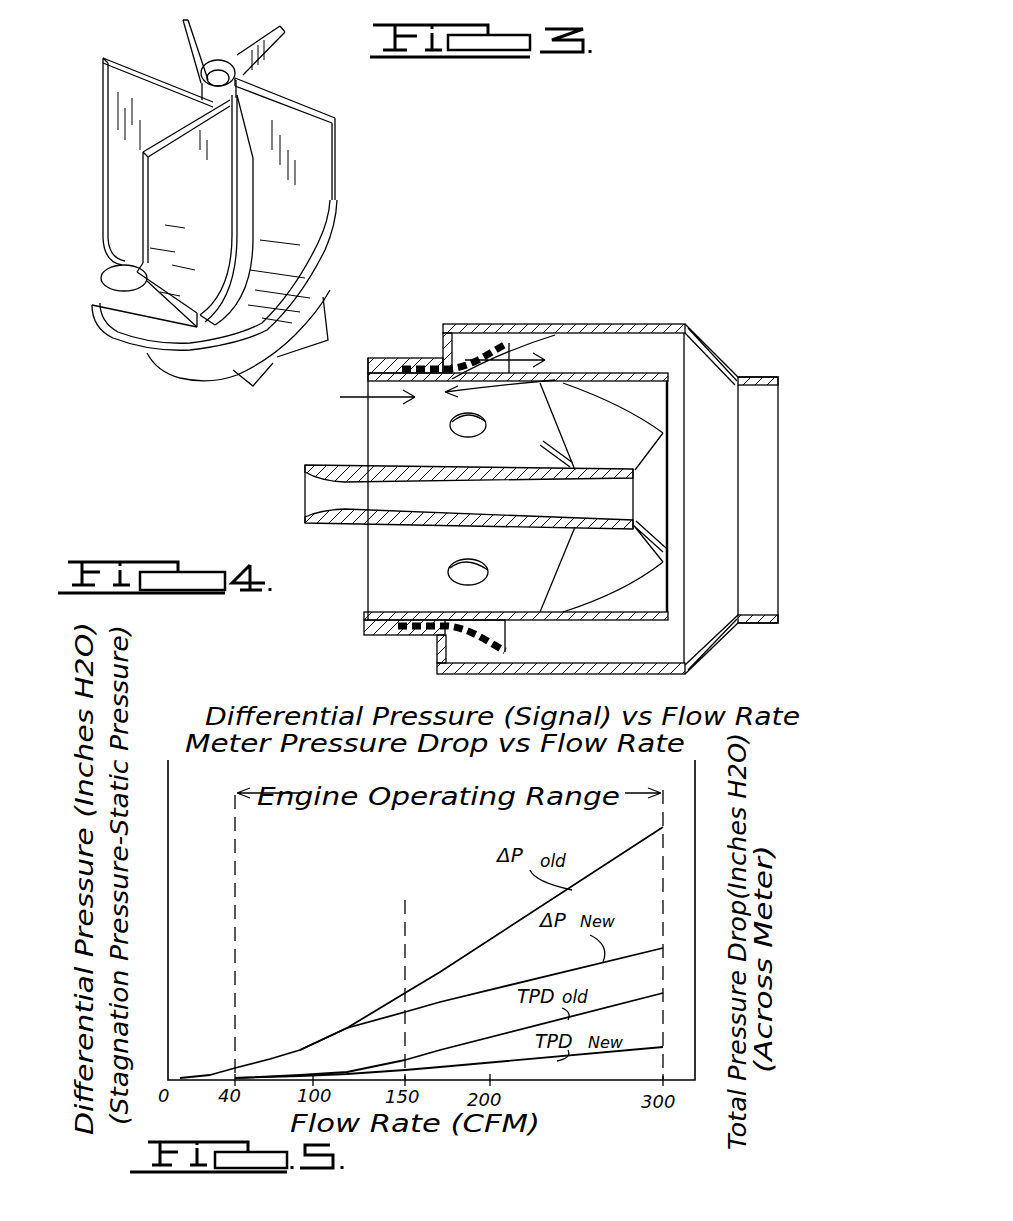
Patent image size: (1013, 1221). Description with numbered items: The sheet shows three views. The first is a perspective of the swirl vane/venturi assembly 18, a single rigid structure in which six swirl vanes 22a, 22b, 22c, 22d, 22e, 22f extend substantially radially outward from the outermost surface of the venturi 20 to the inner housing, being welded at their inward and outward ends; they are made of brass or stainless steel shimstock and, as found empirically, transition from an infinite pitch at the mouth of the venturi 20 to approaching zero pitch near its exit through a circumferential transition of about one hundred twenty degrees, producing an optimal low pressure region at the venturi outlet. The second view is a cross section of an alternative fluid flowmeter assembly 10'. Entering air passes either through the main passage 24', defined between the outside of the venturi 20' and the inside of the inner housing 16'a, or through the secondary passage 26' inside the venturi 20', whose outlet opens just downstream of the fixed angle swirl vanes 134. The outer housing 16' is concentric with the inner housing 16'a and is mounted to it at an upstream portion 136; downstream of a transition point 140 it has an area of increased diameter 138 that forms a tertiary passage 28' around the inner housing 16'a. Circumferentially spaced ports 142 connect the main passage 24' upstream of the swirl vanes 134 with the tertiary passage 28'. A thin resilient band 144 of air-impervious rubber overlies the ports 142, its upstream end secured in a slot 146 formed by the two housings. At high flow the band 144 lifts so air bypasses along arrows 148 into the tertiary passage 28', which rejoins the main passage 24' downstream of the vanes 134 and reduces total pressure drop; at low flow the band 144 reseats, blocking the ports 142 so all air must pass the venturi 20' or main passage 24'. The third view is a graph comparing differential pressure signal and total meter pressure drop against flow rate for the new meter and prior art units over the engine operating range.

In FIG. 3, the swirl vane/venturi assembly 18 is at (362, 180).
In FIG. 3, the venturi 20 is at (218, 55).
In FIG. 3, the swirl vane 22a is at (318, 242).
In FIG. 3, the swirl vane 22b is at (248, 194).
In FIG. 3, the swirl vane 22c is at (200, 204).
In FIG. 3, the swirl vane 22d is at (105, 78).
In FIG. 3, the swirl vane 22e is at (183, 52).
In FIG. 3, the swirl vane 22f is at (272, 58).
In FIG. 4, the fluid flowmeter assembly 10' is at (731, 476).
In FIG. 4, the outer housing 16' is at (518, 444).
In FIG. 4, the inner housing 16'a is at (485, 489).
In FIG. 4, the venturi 20' is at (314, 513).
In FIG. 4, the main passage 24' is at (408, 450).
In FIG. 4, the secondary passage 26' is at (469, 497).
In FIG. 4, the tertiary passage 28' is at (579, 646).
In FIG. 4, the fixed angle swirl vanes 134 is at (624, 444).
In FIG. 4, the upstream mounting portion 136 is at (383, 370).
In FIG. 4, the area of increased diameter 138 is at (630, 325).
In FIG. 4, the transition point 140 is at (437, 340).
In FIG. 4, the ports 142 is at (472, 432).
In FIG. 4, the band 144 is at (512, 366).
In FIG. 4, the slot 146 is at (410, 364).
In FIG. 4, the arrows 148 is at (343, 401).